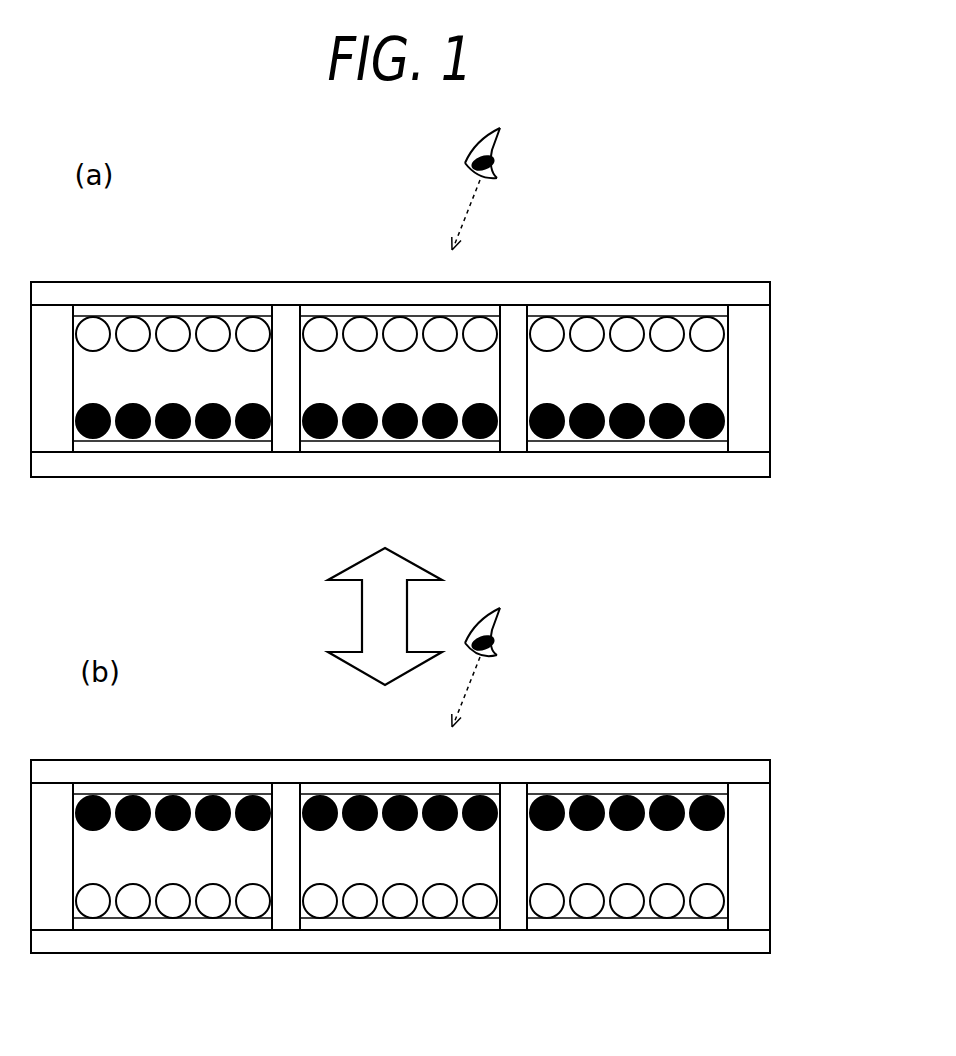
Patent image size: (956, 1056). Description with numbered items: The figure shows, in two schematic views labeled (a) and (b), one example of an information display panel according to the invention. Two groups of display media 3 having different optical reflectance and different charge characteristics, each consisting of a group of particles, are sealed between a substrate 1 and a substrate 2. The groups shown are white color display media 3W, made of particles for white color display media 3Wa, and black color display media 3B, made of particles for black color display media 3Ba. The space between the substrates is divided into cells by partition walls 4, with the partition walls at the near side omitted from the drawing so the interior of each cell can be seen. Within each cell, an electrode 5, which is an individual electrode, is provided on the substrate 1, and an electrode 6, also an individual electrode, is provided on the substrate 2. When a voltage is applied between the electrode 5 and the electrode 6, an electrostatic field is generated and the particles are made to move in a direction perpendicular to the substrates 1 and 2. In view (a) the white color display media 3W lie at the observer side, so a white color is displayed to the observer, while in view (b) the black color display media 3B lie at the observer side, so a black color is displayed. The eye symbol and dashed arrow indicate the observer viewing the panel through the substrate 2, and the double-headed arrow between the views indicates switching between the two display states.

The substrate 1 is at (692, 470).
The substrate 2 is at (688, 284).
The display media 3 is at (837, 318).
The white color display media 3W is at (782, 317).
The black color display media 3B is at (782, 405).
The particles for white color display media 3Wa is at (208, 327).
The particles for black color display media 3Ba is at (208, 438).
The partition wall 4 is at (50, 418).
The electrode 5 is at (607, 443).
The electrode 6 is at (604, 284).